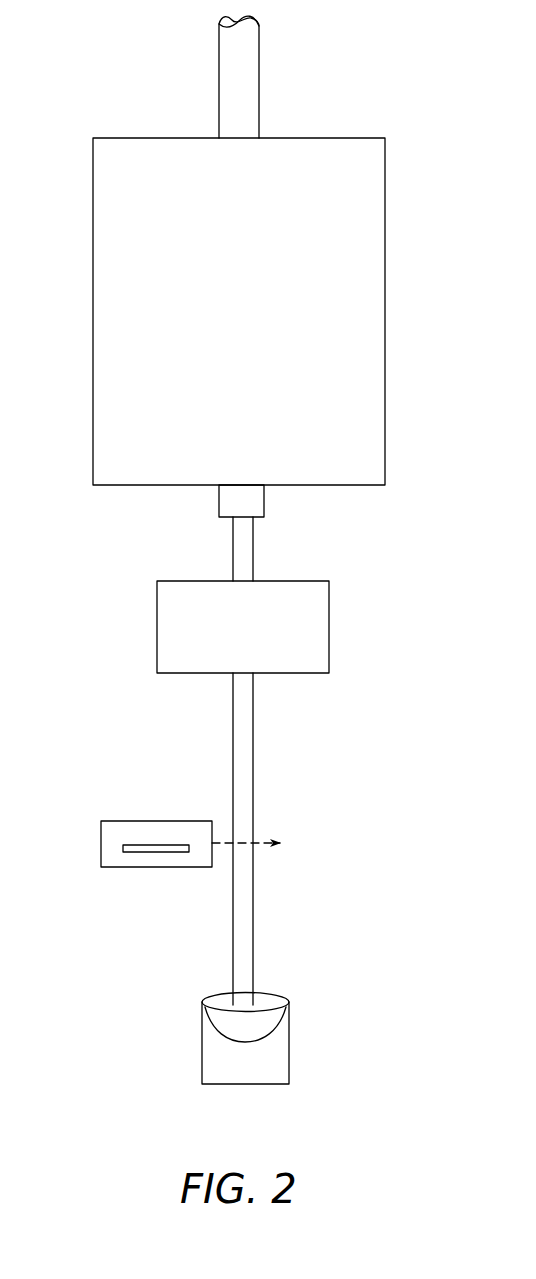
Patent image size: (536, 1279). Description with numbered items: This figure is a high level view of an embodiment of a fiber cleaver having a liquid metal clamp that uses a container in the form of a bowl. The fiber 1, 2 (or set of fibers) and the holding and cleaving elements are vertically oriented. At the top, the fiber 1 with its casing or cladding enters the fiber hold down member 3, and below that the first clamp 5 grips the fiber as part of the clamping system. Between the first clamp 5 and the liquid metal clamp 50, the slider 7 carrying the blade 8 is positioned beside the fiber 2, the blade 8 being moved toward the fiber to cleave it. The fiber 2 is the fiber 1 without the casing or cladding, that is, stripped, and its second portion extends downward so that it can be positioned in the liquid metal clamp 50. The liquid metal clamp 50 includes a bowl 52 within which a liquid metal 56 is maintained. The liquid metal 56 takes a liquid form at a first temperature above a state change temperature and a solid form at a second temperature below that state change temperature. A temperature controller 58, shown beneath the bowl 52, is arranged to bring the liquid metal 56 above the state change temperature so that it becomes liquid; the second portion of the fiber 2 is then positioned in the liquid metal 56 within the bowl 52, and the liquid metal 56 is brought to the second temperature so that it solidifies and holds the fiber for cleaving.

The fiber 1 is at (255, 84).
The fiber 2 is at (254, 763).
The fiber hold down member 3 is at (338, 196).
The first clamp 5 is at (296, 642).
The slider 7 is at (101, 830).
The blade 8 is at (155, 865).
The liquid metal clamp 50 is at (277, 1014).
The bowl 52 is at (282, 1017).
The liquid metal 56 is at (218, 1002).
The temperature controller 58 is at (207, 1067).